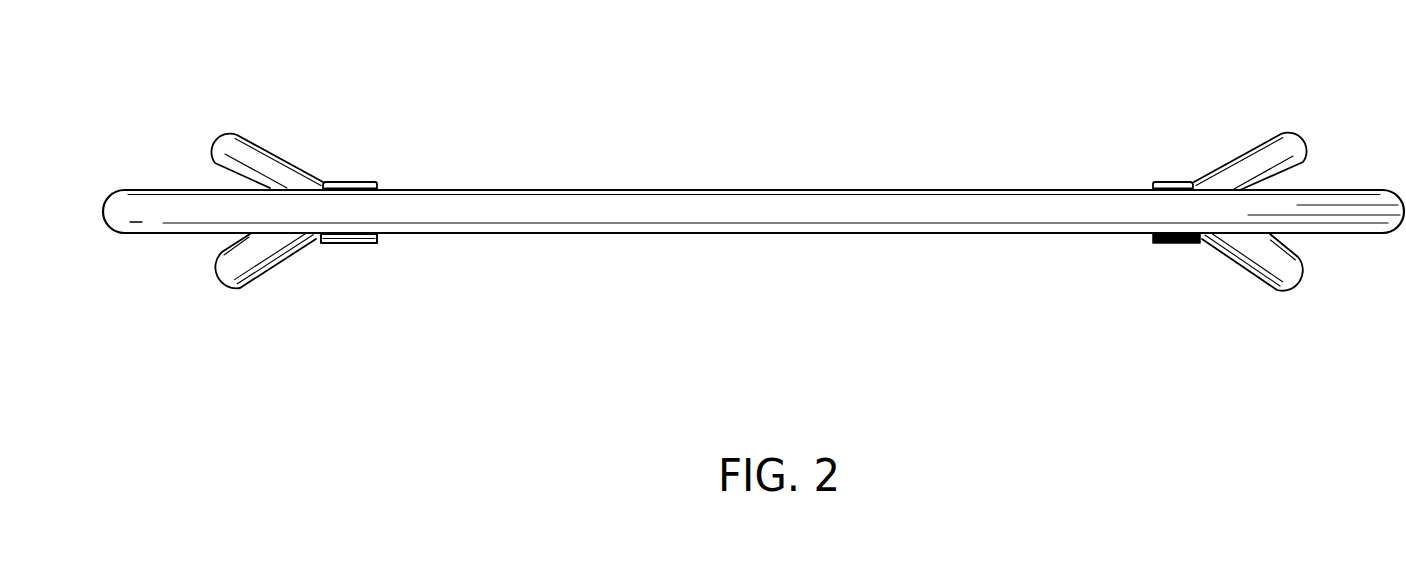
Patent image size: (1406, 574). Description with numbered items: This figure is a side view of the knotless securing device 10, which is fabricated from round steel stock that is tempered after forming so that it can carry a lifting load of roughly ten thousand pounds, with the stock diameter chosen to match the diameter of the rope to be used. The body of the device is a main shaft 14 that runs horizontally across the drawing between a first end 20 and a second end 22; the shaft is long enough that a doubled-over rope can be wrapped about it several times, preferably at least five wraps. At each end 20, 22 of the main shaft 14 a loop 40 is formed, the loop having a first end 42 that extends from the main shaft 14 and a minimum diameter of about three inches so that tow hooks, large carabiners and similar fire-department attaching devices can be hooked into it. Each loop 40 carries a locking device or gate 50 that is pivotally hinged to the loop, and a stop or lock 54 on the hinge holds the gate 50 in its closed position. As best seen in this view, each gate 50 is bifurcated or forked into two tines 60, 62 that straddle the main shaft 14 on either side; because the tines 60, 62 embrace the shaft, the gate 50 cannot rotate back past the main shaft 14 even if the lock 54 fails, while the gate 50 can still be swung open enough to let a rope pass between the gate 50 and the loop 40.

The knotless securing device 10 is at (573, 248).
The main shaft 14 is at (708, 190).
The first end 20 is at (1143, 212).
The second end 22 is at (350, 200).
The loop 40 is at (131, 189).
The first end of loop 42 is at (305, 210).
The gate 50 is at (222, 130).
The stop or lock 54 is at (370, 180).
The tine 60 is at (270, 170).
The tine 62 is at (230, 267).